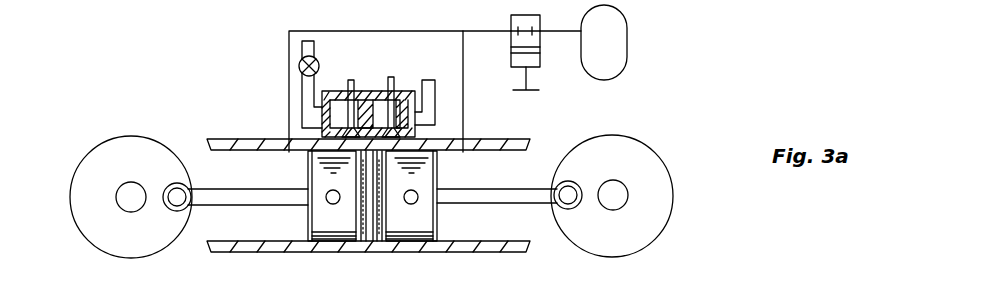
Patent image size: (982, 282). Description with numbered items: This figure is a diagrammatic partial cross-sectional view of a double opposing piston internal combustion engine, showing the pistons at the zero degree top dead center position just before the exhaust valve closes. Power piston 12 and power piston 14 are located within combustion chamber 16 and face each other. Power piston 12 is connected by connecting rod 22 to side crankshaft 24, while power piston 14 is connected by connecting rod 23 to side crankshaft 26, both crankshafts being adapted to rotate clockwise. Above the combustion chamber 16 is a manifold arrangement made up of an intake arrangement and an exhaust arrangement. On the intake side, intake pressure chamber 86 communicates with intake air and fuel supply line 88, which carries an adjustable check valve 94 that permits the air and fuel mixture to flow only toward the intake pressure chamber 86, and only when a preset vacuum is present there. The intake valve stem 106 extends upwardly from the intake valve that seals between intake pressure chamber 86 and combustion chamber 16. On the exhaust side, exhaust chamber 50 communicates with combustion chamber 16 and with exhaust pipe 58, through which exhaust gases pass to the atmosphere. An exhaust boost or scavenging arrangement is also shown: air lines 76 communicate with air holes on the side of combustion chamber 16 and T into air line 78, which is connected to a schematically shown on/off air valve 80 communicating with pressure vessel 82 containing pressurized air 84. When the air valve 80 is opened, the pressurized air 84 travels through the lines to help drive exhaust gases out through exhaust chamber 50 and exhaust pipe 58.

The power piston 12 is at (322, 217).
The power piston 14 is at (435, 216).
The combustion chamber 16 is at (465, 152).
The connecting rod 22 is at (244, 170).
The connecting rod 23 is at (507, 189).
The side crankshaft 24 is at (87, 156).
The side crankshaft 26 is at (662, 146).
The exhaust chamber 50 is at (400, 100).
The exhaust pipe 58 is at (437, 110).
The air lines 76 is at (289, 47).
The air line 78 is at (495, 10).
The on/off air valve 80 is at (540, 58).
The pressure vessel 82 is at (627, 48).
The pressurized air 84 is at (604, 42).
The intake pressure chamber 86 is at (367, 108).
The intake air and fuel supply line 88 is at (302, 108).
The adjustable check valve 94 is at (299, 66).
The intake valve stem 106 is at (350, 84).